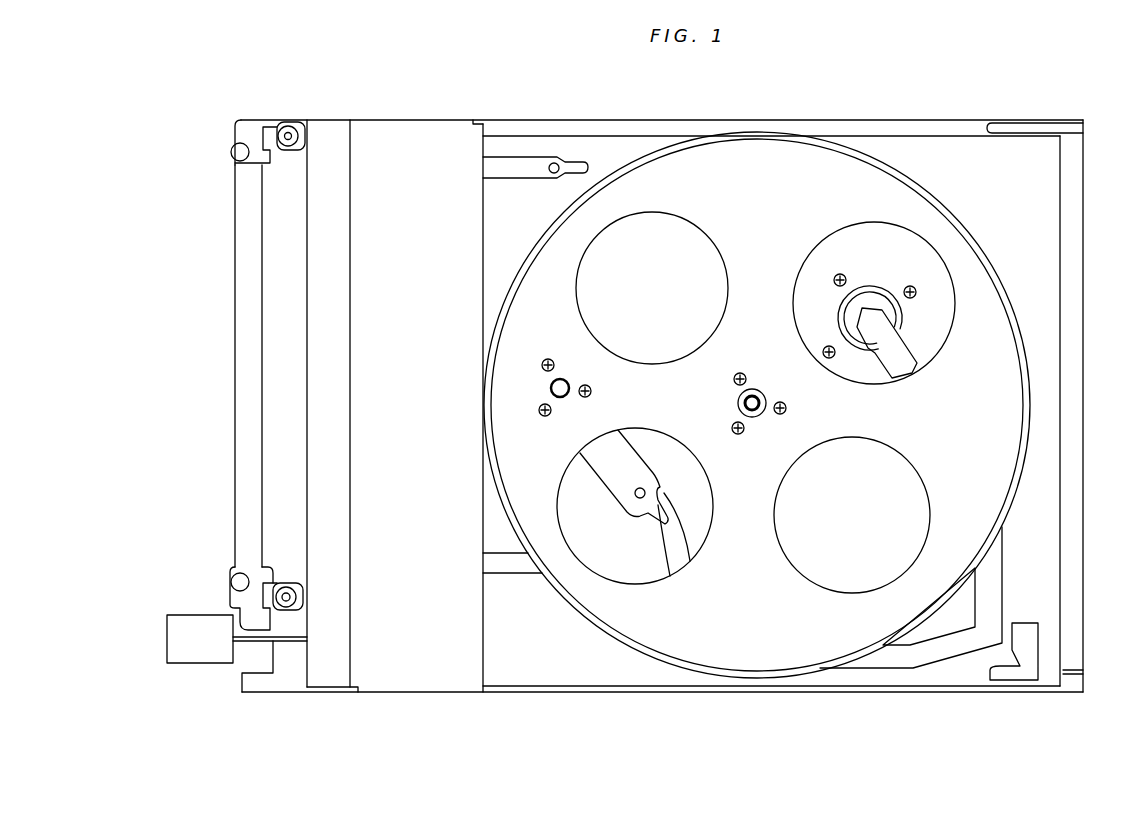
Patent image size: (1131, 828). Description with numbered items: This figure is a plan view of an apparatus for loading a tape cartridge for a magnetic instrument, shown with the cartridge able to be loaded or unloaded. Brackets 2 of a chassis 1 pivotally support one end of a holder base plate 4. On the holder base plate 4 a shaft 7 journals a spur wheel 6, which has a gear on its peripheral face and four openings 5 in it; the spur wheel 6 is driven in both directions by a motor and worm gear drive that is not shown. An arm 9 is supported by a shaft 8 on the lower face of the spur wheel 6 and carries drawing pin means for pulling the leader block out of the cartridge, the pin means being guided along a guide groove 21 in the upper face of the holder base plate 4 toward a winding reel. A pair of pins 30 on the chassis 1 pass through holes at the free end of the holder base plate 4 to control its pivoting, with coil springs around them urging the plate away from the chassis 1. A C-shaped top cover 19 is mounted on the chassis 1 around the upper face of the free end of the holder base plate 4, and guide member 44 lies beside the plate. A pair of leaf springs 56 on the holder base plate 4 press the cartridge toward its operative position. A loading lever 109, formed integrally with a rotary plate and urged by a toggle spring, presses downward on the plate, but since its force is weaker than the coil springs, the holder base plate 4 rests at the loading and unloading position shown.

The chassis 1 is at (282, 695).
The brackets 2 is at (1018, 120).
The holder base plate 4 is at (1046, 236).
The openings 5 is at (583, 307).
The spur wheel 6 is at (1003, 333).
The shaft 7 is at (755, 402).
The shaft 8 is at (563, 387).
The arm 9 is at (638, 473).
The top cover 19 is at (395, 124).
The guide groove 21 is at (980, 588).
The pins 30 is at (296, 128).
The guide rails 44 is at (290, 406).
The leaf springs 56 is at (497, 163).
The loading lever 109 is at (183, 617).